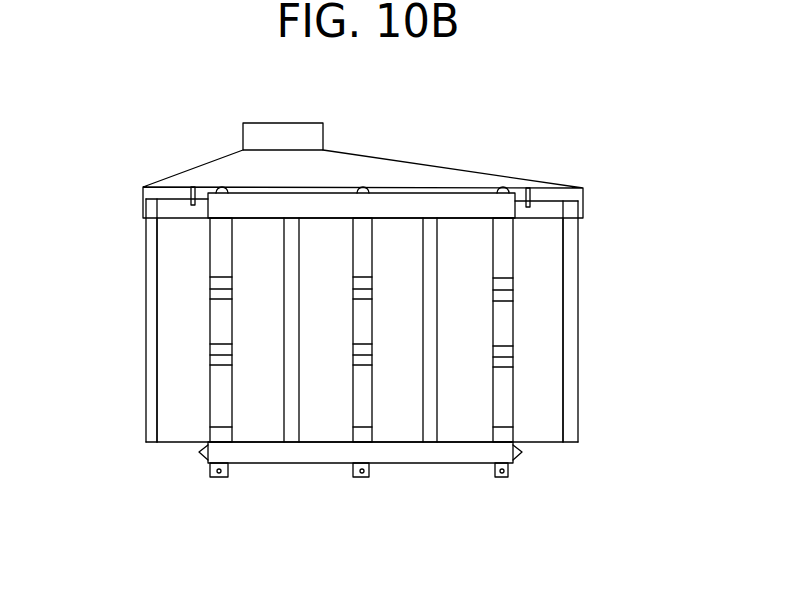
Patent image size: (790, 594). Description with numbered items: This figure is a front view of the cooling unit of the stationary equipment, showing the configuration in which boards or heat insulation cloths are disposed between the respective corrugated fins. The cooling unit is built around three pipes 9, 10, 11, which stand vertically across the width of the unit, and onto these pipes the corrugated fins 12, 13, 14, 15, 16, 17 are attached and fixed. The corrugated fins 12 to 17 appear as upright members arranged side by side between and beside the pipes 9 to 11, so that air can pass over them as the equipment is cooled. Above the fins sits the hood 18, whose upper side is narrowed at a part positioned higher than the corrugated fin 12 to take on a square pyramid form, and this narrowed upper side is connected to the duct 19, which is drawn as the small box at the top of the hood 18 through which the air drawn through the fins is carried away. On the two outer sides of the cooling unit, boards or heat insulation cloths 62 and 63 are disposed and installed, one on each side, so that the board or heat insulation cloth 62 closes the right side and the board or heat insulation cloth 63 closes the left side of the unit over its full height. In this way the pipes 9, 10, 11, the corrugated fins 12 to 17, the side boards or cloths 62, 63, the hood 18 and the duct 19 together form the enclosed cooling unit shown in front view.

The pipe 9 is at (505, 437).
The pipe 10 is at (363, 435).
The pipe 11 is at (222, 435).
The corrugated fin 12 is at (542, 433).
The corrugated fin 13 is at (465, 433).
The corrugated fin 14 is at (397, 433).
The corrugated fin 15 is at (325, 433).
The corrugated fin 16 is at (258, 433).
The corrugated fin 17 is at (177, 433).
The hood 18 is at (410, 163).
The duct 19 is at (315, 132).
The board or heat insulation cloth 62 is at (573, 325).
The board or heat insulation cloth 63 is at (149, 322).